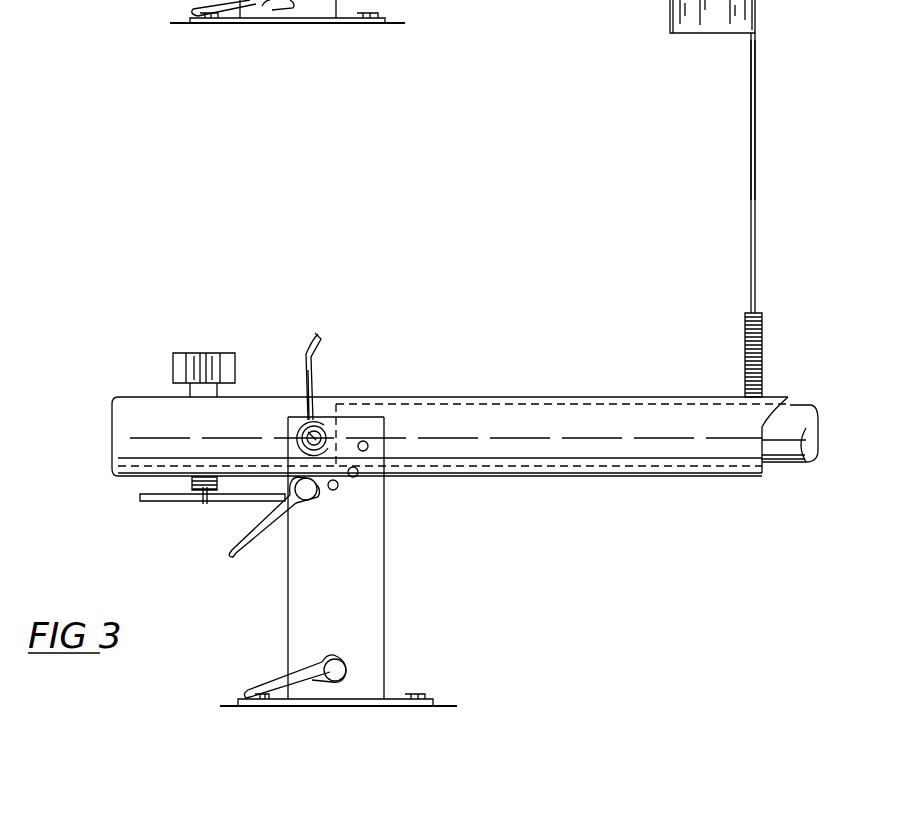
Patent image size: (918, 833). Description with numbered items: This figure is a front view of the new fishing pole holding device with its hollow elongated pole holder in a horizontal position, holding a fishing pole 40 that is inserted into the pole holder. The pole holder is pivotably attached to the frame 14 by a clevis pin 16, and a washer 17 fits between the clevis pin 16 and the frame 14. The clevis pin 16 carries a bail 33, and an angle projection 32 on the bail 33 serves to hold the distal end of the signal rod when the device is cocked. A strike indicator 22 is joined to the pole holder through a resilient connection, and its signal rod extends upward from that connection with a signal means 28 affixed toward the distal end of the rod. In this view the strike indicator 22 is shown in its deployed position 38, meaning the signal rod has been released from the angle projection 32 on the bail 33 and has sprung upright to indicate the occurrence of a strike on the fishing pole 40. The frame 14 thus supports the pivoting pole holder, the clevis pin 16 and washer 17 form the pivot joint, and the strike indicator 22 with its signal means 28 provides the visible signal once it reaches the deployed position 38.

The frame 14 is at (357, 584).
The clevis pin 16 is at (300, 417).
The washer 17 is at (289, 448).
The strike indicator 22 is at (751, 238).
The signal means 28 is at (661, 0).
The angle projection 32 is at (319, 338).
The bail 33 is at (311, 386).
The deployed position 38 is at (751, 120).
The fishing pole 40 is at (782, 447).